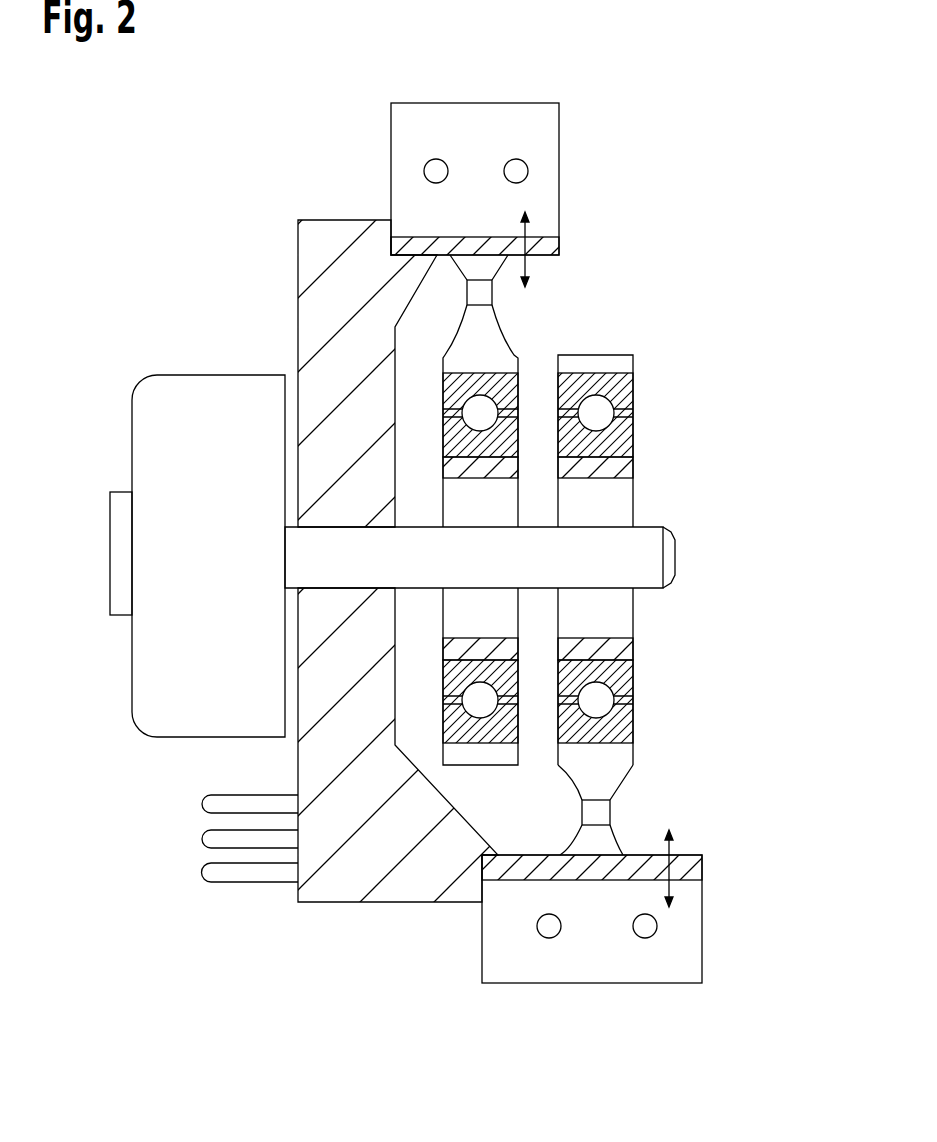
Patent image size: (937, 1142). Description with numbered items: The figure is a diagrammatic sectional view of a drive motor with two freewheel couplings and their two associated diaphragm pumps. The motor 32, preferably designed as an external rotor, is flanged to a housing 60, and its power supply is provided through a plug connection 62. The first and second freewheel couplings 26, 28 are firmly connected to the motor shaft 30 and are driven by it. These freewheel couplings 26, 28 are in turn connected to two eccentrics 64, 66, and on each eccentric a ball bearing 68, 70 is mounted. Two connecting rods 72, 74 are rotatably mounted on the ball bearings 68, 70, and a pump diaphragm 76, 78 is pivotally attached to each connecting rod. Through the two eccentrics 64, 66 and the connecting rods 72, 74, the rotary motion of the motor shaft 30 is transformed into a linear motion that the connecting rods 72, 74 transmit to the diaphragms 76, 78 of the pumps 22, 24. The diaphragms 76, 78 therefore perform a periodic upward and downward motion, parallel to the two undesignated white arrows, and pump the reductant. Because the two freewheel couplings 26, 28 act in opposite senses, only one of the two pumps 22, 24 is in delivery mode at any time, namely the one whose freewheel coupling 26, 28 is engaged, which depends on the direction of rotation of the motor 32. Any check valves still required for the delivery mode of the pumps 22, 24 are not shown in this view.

The pump 22 is at (544, 133).
The pump 24 is at (676, 981).
The first freewheel coupling 26 is at (460, 615).
The second freewheel coupling 28 is at (615, 507).
The motor shaft 30 is at (643, 575).
The motor 32 is at (163, 438).
The housing 60 is at (340, 268).
The plug connection 62 is at (235, 875).
The eccentric 64 is at (522, 652).
The eccentric 66 is at (641, 651).
The ball bearing 68 is at (529, 386).
The ball bearing 70 is at (646, 405).
The connecting rod 72 is at (485, 335).
The connecting rod 74 is at (612, 782).
The pump diaphragm 76 is at (548, 248).
The pump diaphragm 78 is at (592, 868).